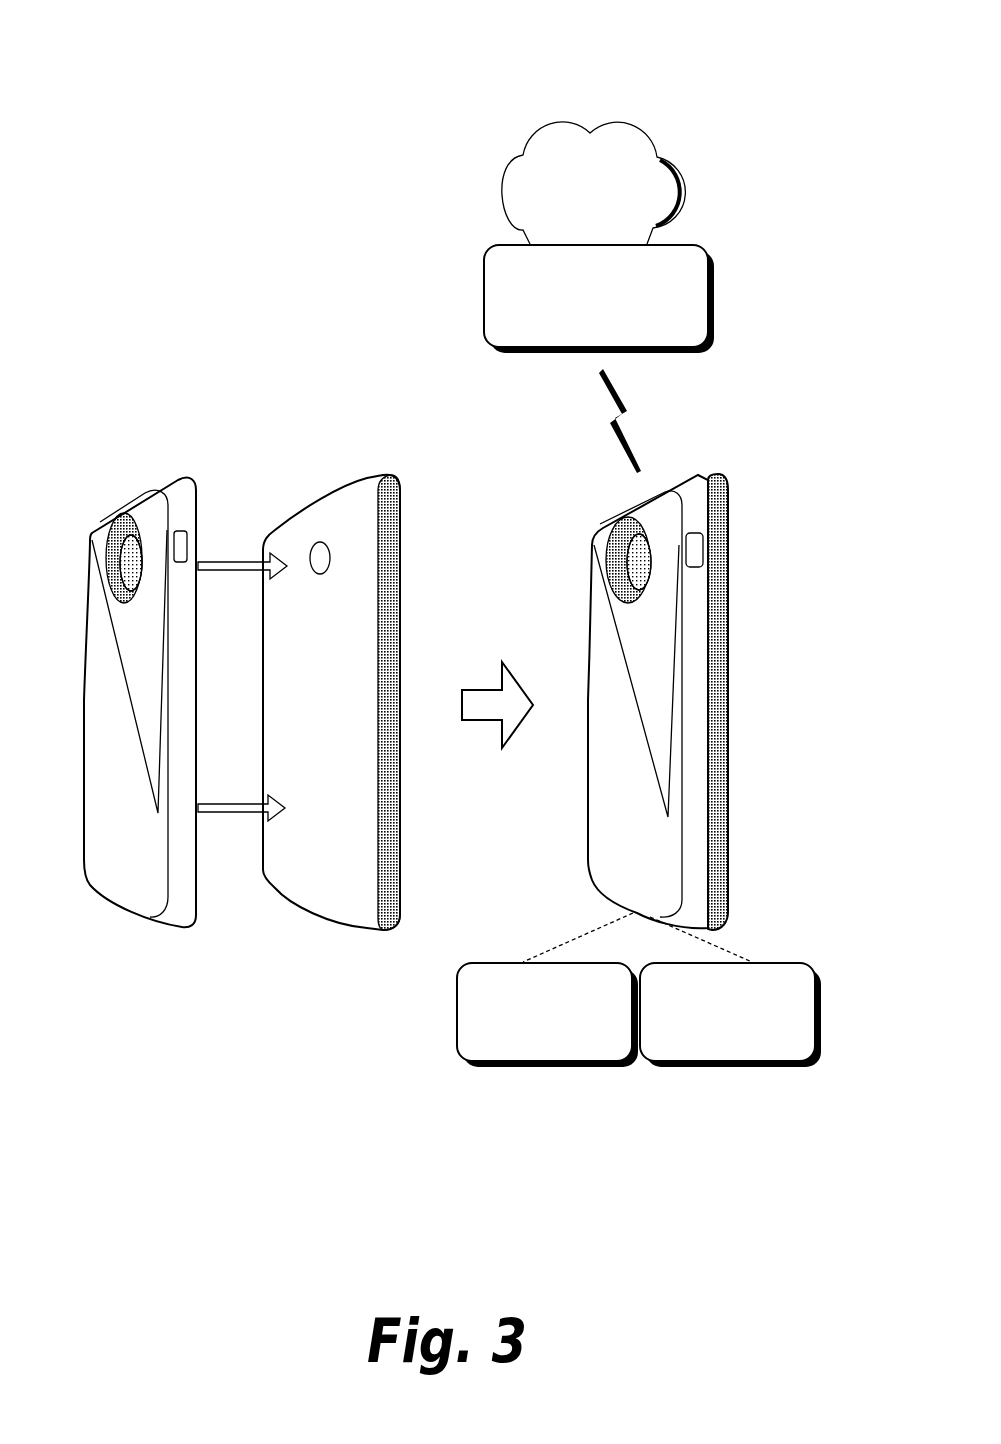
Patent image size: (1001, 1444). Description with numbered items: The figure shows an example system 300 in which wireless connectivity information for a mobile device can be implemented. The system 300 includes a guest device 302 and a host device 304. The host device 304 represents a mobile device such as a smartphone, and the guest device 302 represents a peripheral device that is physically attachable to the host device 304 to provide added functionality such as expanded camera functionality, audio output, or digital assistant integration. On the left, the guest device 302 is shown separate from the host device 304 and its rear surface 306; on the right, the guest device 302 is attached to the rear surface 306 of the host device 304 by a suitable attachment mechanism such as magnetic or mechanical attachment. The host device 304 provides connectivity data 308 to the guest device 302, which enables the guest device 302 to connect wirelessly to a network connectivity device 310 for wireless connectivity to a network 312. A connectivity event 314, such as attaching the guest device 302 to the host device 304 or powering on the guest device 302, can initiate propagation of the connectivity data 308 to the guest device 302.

The system 300 is at (119, 40).
The guest device 302 is at (167, 487).
The host device 304 is at (308, 503).
The rear surface 306 is at (267, 704).
The connectivity data 308 is at (547, 990).
The network connectivity device 310 is at (599, 299).
The network 312 is at (594, 183).
The connectivity event 314 is at (730, 992).